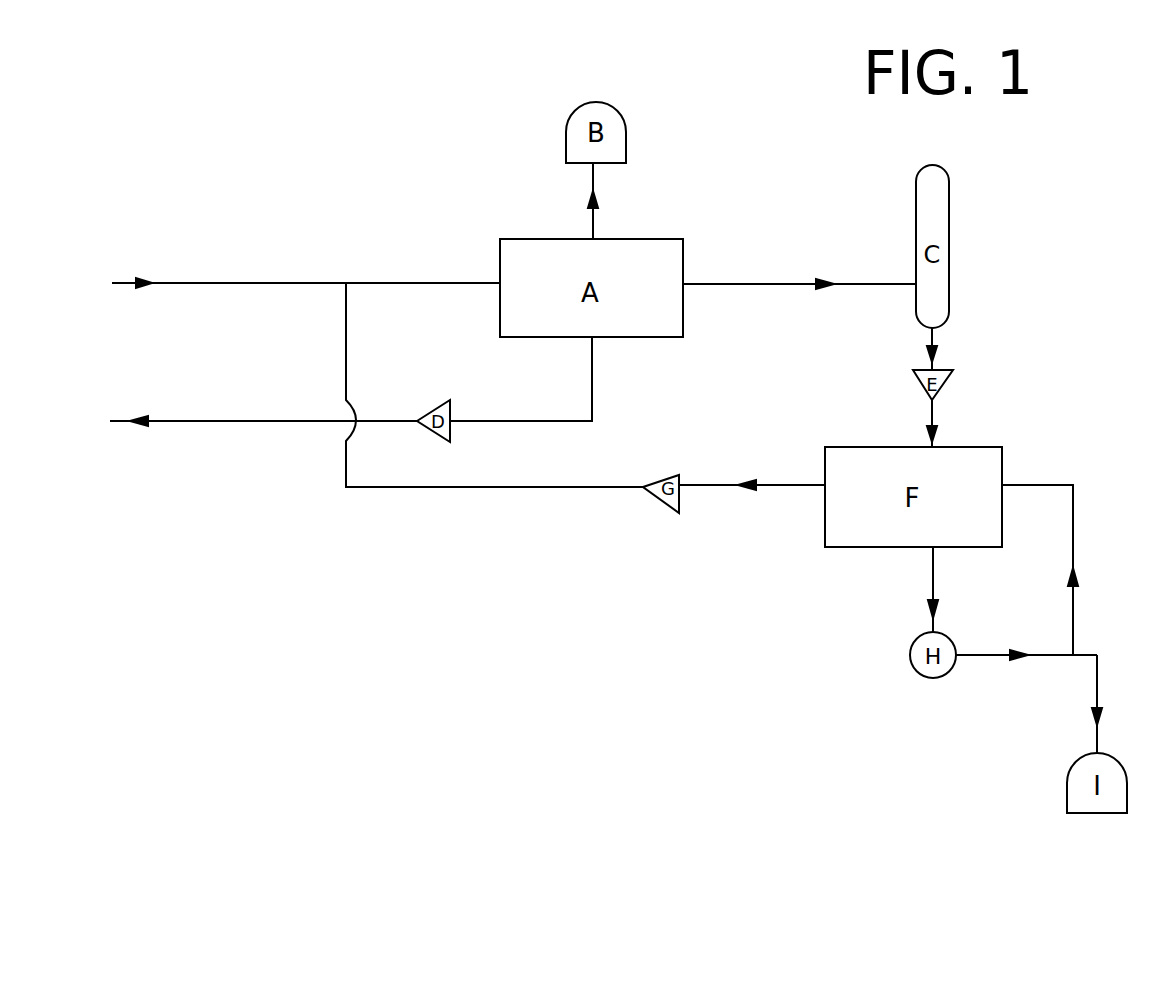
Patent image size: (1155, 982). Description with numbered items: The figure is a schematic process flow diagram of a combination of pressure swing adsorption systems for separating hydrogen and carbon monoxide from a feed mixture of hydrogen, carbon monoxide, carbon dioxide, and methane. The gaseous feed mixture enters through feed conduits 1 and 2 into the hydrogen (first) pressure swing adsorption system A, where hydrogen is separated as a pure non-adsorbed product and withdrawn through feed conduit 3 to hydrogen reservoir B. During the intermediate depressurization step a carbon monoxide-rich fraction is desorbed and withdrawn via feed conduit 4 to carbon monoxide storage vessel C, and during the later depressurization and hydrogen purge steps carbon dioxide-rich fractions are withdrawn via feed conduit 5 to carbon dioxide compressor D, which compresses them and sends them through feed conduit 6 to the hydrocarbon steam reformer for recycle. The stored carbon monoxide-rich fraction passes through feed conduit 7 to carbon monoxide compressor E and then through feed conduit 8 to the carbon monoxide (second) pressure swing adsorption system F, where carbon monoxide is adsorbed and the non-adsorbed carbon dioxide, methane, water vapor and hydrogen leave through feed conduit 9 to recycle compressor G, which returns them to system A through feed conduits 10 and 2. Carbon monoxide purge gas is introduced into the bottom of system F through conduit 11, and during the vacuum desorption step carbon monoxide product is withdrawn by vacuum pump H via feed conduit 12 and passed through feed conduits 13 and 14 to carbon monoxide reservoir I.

The feed conduit 1 is at (255, 283).
The feed conduit 2 is at (441, 278).
The feed conduit 3 is at (593, 223).
The feed conduit 4 is at (768, 284).
The feed conduit 5 is at (592, 405).
The feed conduit 6 is at (252, 421).
The feed conduit 7 is at (932, 343).
The feed conduit 8 is at (932, 423).
The feed conduit 9 is at (718, 485).
The feed conduit 10 is at (440, 487).
The conduit 11 is at (1073, 605).
The feed conduit 12 is at (933, 575).
The feed conduit 13 is at (993, 655).
The feed conduit 14 is at (1097, 690).